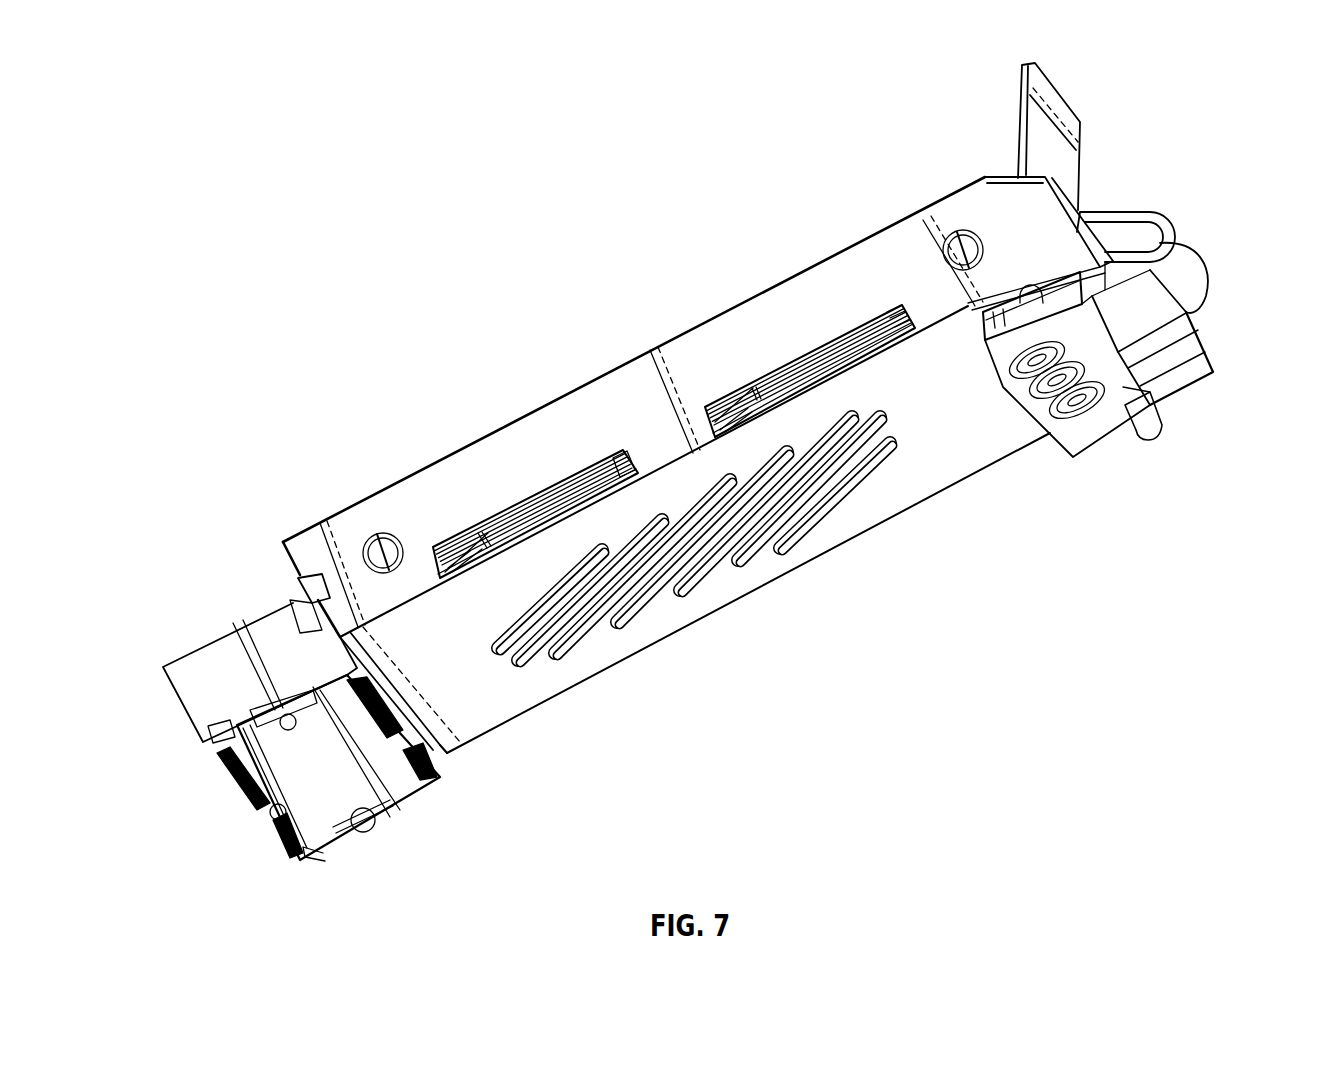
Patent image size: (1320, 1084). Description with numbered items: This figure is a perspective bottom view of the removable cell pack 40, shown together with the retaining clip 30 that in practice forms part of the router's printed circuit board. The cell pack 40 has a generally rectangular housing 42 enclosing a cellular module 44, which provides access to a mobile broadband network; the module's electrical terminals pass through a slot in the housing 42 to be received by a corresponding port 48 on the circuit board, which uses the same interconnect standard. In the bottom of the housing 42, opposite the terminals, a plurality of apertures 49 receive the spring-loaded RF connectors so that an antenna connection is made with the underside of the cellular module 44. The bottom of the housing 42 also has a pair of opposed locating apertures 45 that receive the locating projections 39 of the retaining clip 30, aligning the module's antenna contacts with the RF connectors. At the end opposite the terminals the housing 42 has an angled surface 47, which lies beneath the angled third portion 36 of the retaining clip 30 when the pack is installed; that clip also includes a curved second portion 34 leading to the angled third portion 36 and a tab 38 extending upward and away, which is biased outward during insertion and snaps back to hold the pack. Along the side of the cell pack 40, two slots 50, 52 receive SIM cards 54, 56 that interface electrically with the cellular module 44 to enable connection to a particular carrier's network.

The retaining clip 30 is at (1100, 152).
The curved second portion 34 is at (1183, 272).
The angled third portion 36 is at (1122, 238).
The tab 38 is at (1070, 126).
The locating projections 39 is at (1020, 302).
The removable cell pack 40 is at (612, 350).
The housing 42 is at (773, 312).
The cellular module 44 is at (310, 605).
The locating apertures 45 is at (982, 318).
The angled surface 47 is at (992, 170).
The port 48 is at (228, 650).
The apertures 49 is at (1076, 398).
The slot 50 is at (453, 545).
The slot 52 is at (731, 400).
The SIM card 54 is at (560, 490).
The SIM card 56 is at (848, 338).